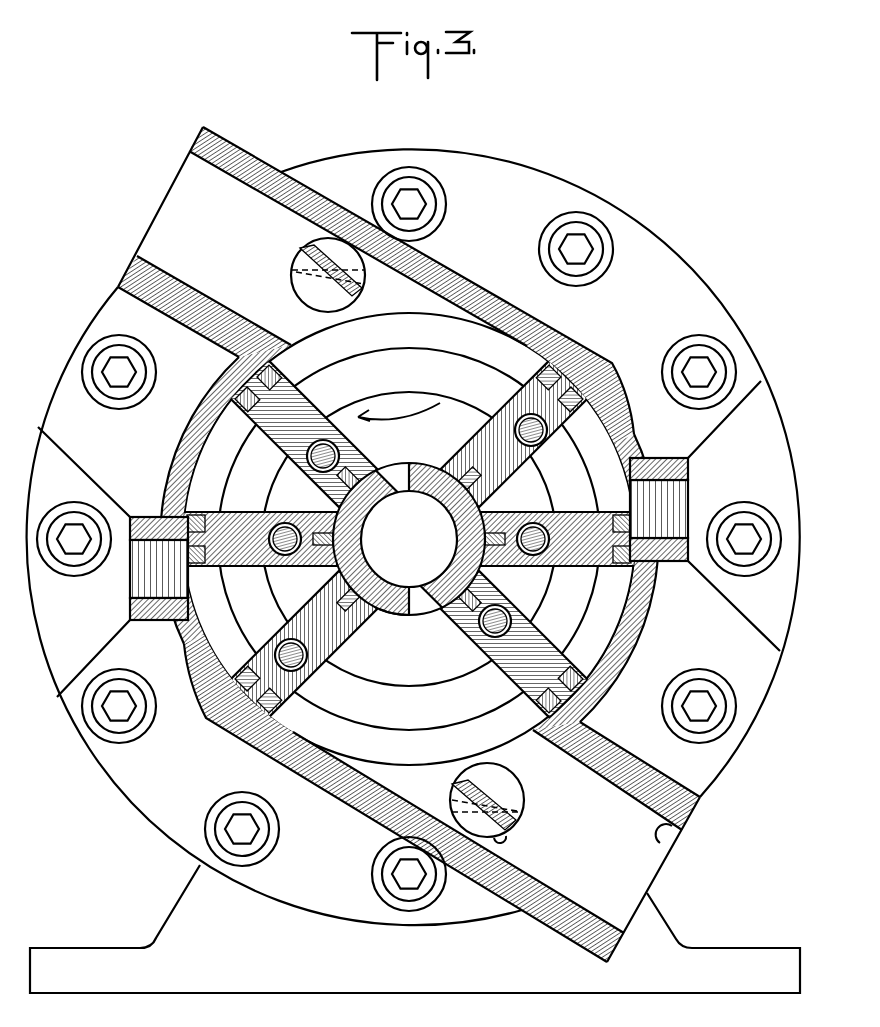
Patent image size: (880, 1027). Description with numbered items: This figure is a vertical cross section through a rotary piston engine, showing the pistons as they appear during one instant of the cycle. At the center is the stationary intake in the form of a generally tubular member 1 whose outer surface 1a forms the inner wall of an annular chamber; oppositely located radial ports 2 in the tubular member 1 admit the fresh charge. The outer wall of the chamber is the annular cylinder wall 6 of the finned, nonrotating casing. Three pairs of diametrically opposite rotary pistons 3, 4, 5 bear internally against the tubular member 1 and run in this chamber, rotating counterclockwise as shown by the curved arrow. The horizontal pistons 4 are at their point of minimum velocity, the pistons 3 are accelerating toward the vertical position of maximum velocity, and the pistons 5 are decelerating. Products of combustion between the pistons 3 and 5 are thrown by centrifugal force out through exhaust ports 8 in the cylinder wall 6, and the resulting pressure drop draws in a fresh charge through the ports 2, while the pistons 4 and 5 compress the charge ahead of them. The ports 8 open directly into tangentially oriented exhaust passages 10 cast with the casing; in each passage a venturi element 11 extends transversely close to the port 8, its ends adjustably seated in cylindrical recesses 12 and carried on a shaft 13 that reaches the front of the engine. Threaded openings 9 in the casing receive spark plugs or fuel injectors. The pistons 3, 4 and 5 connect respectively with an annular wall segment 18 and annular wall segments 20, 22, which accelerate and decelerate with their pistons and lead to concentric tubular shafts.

The tubular member 1 is at (409, 539).
The outer surface of the tubular member 1a is at (407, 628).
The radial ports 2 is at (409, 539).
The rotary pistons 3 is at (418, 557).
The rotary pistons 4 is at (409, 523).
The rotary pistons 5 is at (409, 539).
The annular cylinder wall 6 is at (213, 640).
The exhaust ports 8 is at (292, 322).
The threaded openings 9 is at (142, 589).
The exhaust passages 10 is at (198, 160).
The venturi element 11 is at (513, 791).
The cylindrical recesses 12 is at (507, 833).
The shaft 13 is at (460, 792).
The annular wall segment 18 is at (436, 383).
The annular wall segments 20 is at (436, 338).
The annular wall segments 22 is at (429, 443).